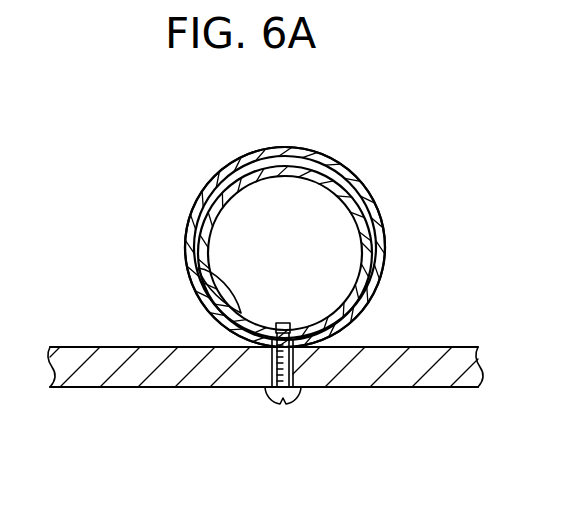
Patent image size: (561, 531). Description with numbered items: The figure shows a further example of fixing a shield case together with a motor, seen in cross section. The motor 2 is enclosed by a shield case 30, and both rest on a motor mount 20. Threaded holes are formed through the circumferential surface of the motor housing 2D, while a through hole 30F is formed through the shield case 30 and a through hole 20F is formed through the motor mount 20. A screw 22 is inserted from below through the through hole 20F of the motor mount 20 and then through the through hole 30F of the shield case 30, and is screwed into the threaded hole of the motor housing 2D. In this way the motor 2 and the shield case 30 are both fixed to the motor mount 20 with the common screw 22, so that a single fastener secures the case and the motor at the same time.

The motor 2 is at (335, 252).
The motor housing 2D is at (228, 173).
The shield case 30 is at (363, 186).
The through hole 30F is at (195, 268).
The motor mount 20 is at (158, 382).
The through hole 20F is at (272, 356).
The screw 22 is at (304, 396).